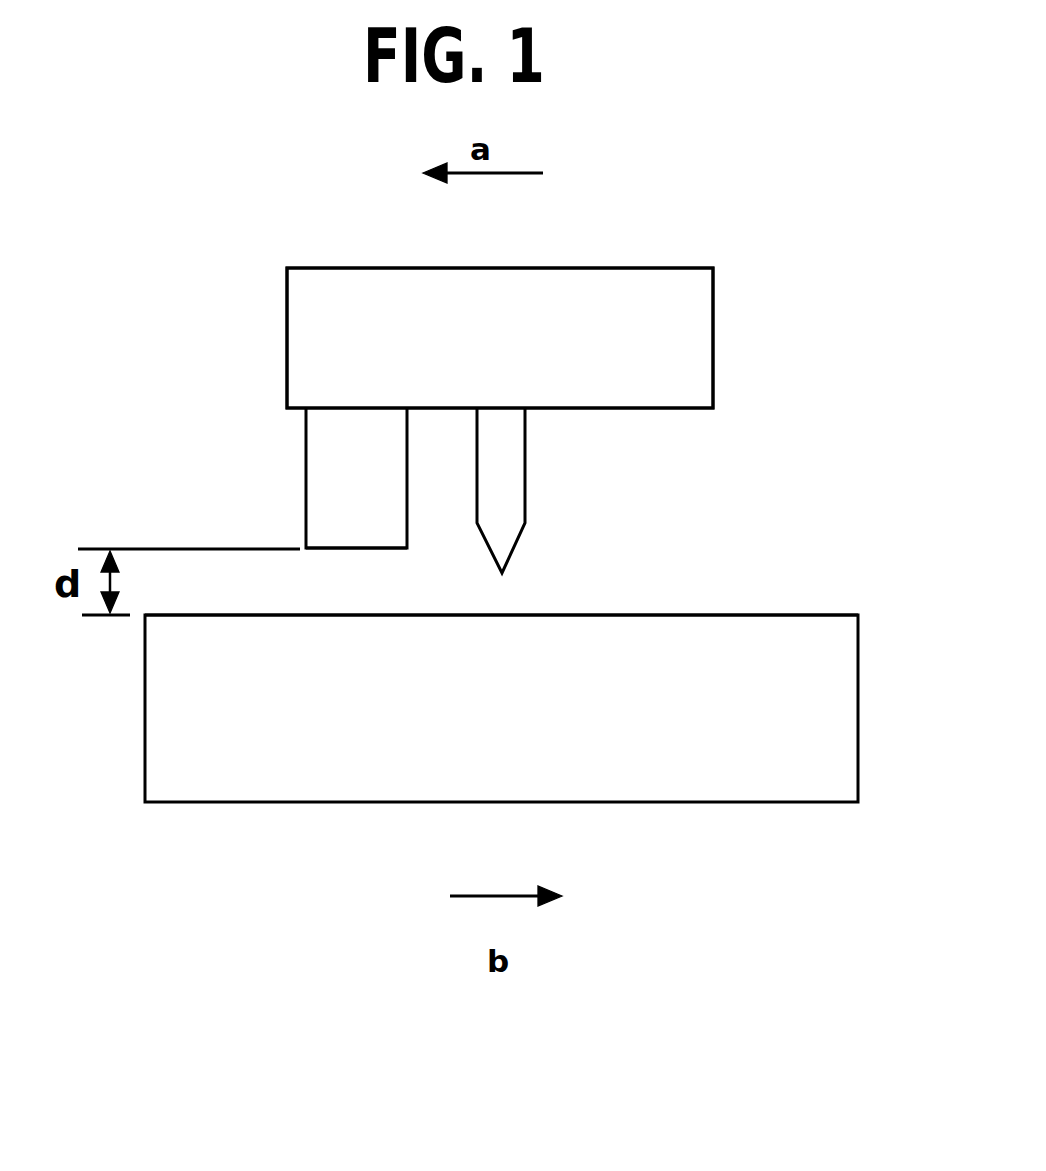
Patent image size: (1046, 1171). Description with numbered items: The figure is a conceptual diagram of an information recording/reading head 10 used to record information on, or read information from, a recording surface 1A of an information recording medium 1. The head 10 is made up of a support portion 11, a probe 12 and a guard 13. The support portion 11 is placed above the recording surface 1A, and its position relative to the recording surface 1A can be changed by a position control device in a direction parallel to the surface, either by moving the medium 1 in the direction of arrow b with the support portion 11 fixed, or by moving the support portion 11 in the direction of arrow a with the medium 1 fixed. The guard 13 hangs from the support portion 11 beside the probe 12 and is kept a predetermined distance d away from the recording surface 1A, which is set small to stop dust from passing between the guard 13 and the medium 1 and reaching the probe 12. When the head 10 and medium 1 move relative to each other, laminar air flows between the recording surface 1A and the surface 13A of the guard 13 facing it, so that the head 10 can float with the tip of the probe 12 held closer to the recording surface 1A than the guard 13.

The information recording/reading head 10 is at (753, 224).
The support portion 11 is at (303, 307).
The probe 12 is at (518, 487).
The guard 13 is at (315, 460).
The surface facing the recording surface 13A is at (330, 550).
The information recording medium 1 is at (848, 738).
The recording surface 1A is at (780, 612).